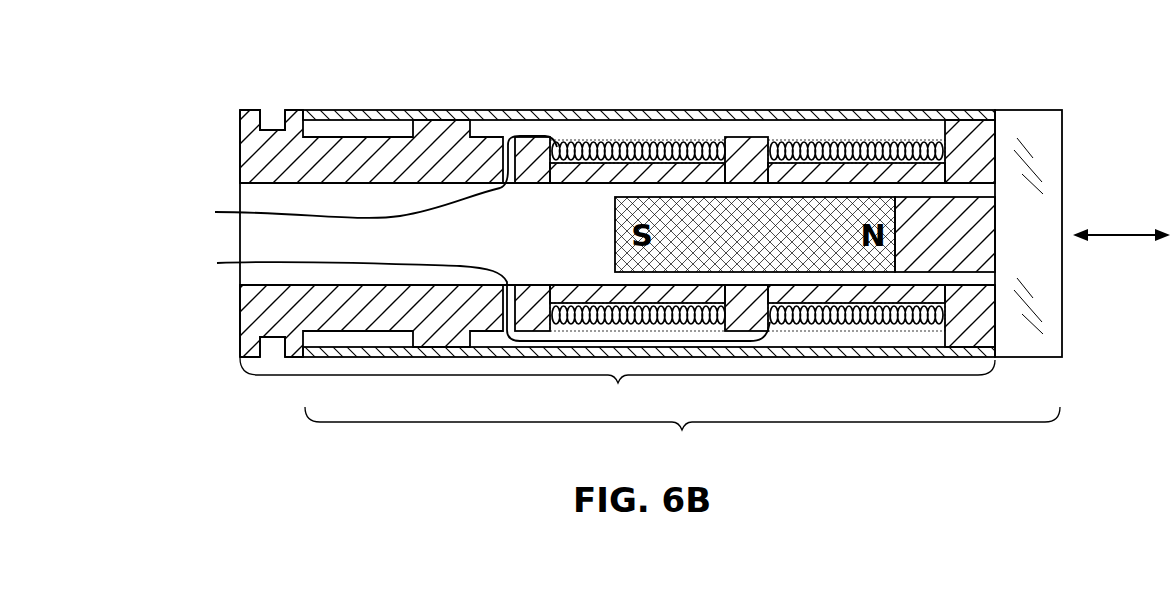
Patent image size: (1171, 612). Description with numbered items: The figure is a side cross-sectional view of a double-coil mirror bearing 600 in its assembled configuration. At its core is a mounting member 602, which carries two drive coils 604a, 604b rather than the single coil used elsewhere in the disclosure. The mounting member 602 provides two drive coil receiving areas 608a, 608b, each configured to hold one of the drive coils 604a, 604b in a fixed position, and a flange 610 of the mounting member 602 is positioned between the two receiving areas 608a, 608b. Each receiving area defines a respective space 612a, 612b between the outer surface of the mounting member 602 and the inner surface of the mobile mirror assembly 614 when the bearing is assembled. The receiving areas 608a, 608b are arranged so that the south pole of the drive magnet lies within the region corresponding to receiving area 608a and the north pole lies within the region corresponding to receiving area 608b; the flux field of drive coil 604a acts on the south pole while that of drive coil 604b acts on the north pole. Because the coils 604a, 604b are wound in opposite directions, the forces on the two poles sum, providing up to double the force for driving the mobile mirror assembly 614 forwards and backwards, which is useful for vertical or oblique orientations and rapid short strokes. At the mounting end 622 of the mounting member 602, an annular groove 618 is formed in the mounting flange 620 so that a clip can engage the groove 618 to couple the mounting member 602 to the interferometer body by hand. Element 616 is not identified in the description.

The mirror bearing 600 is at (972, 60).
The mounting member 602 is at (617, 265).
The drive coil 604a is at (670, 147).
The drive coil 604b is at (888, 147).
The drive coil receiving area 608a is at (603, 143).
The drive coil receiving area 608b is at (772, 143).
The flange 610 is at (747, 140).
The space 612a is at (628, 130).
The space 612b is at (848, 130).
The mobile mirror assembly 614 is at (682, 437).
The end block 616 is at (437, 135).
The annular groove 618 is at (274, 124).
The mounting flange 620 is at (252, 110).
The mounting end 622 is at (233, 134).